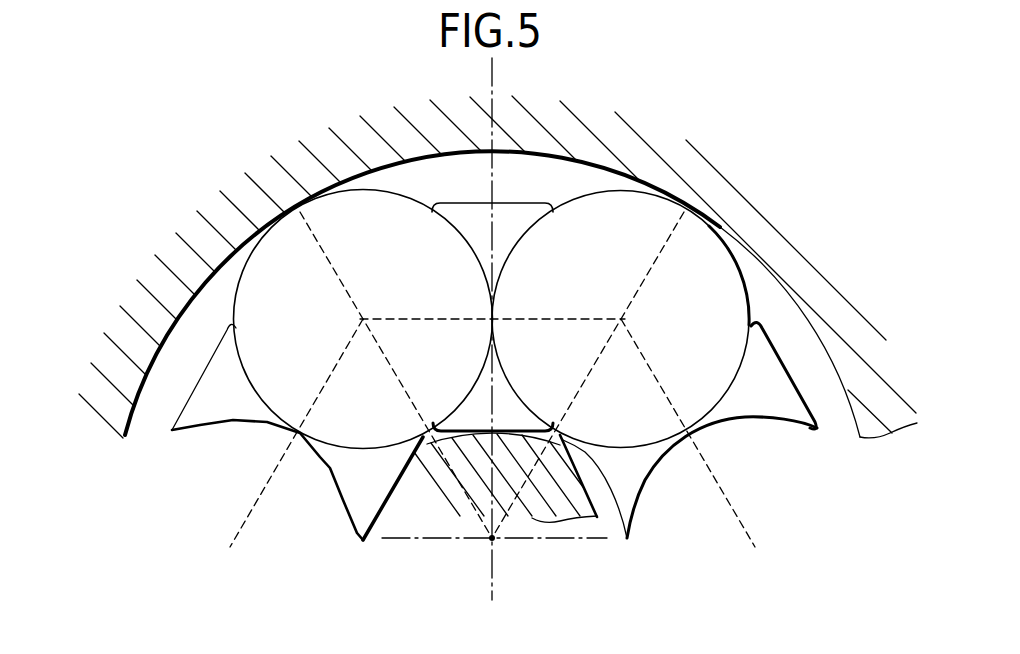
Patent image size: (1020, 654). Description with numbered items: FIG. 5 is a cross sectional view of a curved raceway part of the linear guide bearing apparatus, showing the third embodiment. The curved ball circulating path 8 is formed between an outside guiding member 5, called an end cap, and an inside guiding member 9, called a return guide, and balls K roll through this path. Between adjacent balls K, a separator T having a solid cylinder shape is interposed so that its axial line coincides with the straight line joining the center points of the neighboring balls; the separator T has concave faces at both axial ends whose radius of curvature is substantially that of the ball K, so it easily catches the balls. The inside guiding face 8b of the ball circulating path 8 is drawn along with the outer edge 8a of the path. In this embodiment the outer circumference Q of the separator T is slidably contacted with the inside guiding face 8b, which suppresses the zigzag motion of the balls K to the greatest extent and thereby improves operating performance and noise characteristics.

The outside guiding member 5 is at (828, 274).
The ball circulating path 8 is at (752, 460).
The retainer outer edge 8a is at (852, 393).
The inside guiding face 8b is at (565, 452).
The inside guiding member 9 is at (382, 510).
The ball K is at (367, 203).
The separator T is at (176, 415).
The outer circumference Q is at (498, 433).